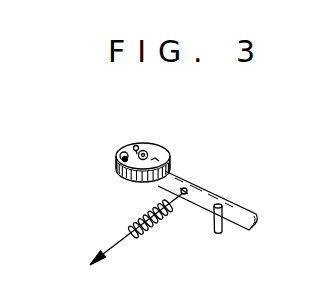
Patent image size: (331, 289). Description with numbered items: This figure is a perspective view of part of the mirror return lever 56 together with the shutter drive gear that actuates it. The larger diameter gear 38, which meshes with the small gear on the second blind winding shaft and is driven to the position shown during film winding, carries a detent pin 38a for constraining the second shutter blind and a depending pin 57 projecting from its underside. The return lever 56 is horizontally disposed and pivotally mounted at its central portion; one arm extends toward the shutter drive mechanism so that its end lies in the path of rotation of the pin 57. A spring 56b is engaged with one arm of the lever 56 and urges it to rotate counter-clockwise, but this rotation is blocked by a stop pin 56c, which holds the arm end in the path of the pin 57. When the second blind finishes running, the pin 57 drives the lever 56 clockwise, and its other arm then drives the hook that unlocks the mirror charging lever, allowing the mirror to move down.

The larger diameter gear 38 is at (166, 150).
The detent pin 38a is at (119, 153).
The depending pin 57 is at (137, 144).
The mirror return lever 56 is at (242, 208).
The spring 56b is at (156, 222).
The stop pin 56c is at (216, 236).